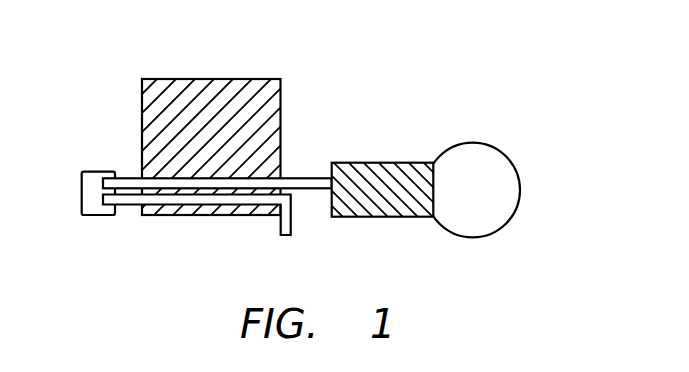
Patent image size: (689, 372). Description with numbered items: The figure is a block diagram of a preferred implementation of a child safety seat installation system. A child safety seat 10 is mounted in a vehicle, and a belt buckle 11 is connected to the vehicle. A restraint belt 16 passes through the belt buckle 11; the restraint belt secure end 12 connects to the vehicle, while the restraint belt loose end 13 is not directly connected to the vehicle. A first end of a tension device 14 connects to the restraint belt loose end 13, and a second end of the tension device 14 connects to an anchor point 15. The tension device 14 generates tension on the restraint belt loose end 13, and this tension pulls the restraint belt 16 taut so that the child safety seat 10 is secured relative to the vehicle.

The child safety seat 10 is at (205, 93).
The belt buckle 11 is at (92, 172).
The restraint belt secure end 12 is at (291, 223).
The restraint belt loose end 13 is at (312, 178).
The tension device 14 is at (380, 162).
The anchor point 15 is at (507, 186).
The restraint belt 16 is at (120, 166).